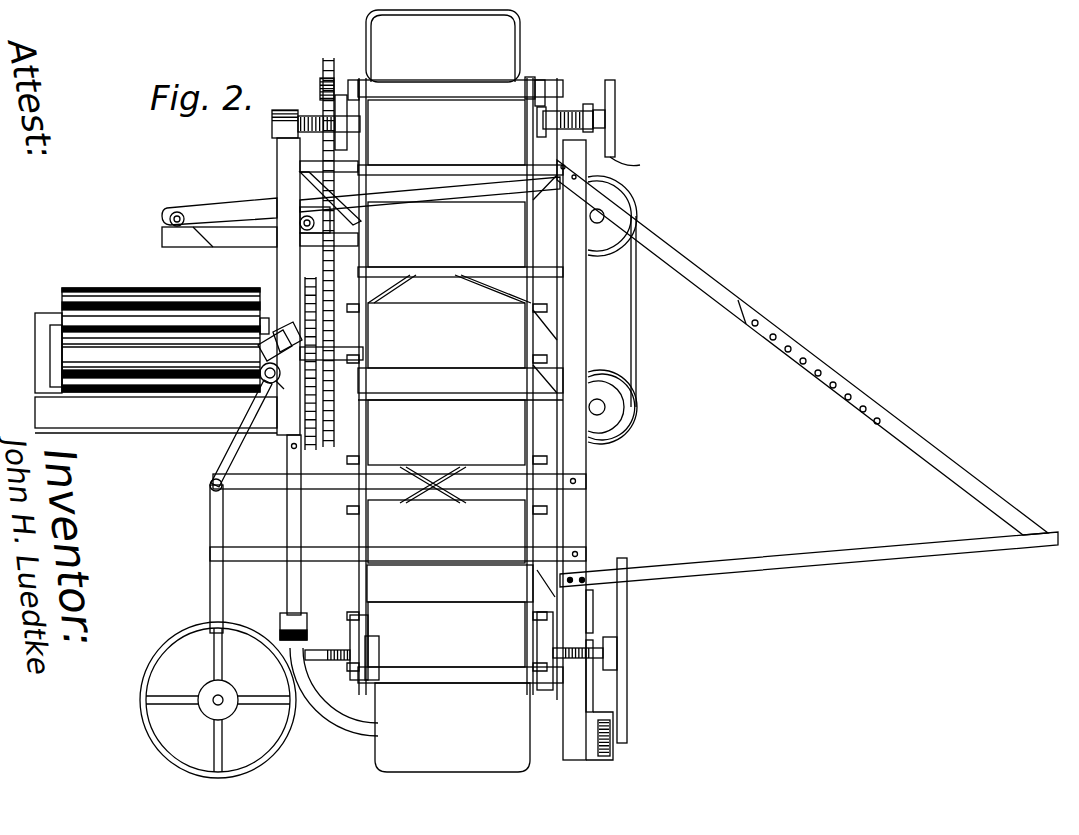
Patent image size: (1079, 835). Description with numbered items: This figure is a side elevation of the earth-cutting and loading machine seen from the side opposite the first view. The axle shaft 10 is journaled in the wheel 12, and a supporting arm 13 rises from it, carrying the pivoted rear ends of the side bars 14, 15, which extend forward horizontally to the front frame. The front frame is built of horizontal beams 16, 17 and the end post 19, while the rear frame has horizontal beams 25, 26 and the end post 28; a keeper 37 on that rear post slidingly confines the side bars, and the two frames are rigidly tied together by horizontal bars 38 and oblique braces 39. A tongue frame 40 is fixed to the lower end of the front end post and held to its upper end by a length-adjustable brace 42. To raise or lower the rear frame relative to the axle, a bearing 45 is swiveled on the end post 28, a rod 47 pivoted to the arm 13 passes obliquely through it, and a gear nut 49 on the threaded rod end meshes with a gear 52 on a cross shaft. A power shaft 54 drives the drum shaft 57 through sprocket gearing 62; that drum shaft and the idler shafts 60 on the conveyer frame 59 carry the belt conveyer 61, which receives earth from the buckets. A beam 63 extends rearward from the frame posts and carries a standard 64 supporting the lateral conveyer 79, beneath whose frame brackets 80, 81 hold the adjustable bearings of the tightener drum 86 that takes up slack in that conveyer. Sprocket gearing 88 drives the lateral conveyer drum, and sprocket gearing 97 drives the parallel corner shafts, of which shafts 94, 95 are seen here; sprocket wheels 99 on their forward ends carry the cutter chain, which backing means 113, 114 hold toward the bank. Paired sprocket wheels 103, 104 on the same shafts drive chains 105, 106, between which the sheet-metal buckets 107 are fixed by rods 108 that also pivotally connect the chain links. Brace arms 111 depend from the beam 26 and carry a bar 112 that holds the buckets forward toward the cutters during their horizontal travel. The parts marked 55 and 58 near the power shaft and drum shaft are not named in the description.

The axle shaft 10 is at (216, 698).
The wheel 12 is at (160, 660).
The supporting arm 13 is at (210, 587).
The side bar 14 is at (248, 481).
The side bar 15 is at (255, 561).
The horizontal beam 16 is at (639, 155).
The horizontal beam 17 is at (590, 620).
The end post 19 is at (586, 337).
The horizontal beam 25 is at (272, 148).
The horizontal beam 26 is at (280, 625).
The end post 28 is at (288, 178).
The keeper 37 is at (292, 527).
The horizontal bar 38 is at (331, 350).
The oblique brace 39 is at (404, 285).
The tongue frame 40 is at (829, 560).
The brace 42 is at (918, 448).
The bearing 45 is at (280, 339).
The rod 47 is at (225, 462).
The gear nut 49 is at (260, 362).
The gear 52 is at (288, 392).
The power shaft 54 is at (606, 406).
The shaft 55 is at (606, 414).
The drum shaft 57 is at (604, 212).
The shaft 58 is at (605, 226).
The conveyer frame 59 is at (245, 247).
The idler shaft 60 is at (188, 220).
The belt conveyer 61 is at (430, 190).
The sprocket gearing 62 is at (636, 285).
The beam 63 is at (156, 415).
The standard 64 is at (43, 366).
The conveyer 79 is at (146, 296).
The bracket 80 is at (56, 349).
The bracket 81 is at (161, 357).
The tightener drum 86 is at (161, 357).
The sprocket gearing 88 is at (305, 282).
The shaft 94 is at (316, 120).
The shaft 95 is at (330, 650).
The sprocket gearing 97 is at (320, 80).
The sprocket wheel 99 is at (615, 82).
The sprocket wheel 103 is at (540, 86).
The sprocket wheel 104 is at (372, 86).
The chain 105 is at (520, 80).
The chain 106 is at (355, 78).
The bucket 107 is at (448, 391).
The rod 108 is at (345, 95).
The brace arm 111 is at (330, 712).
The bar 112 is at (340, 702).
The backing means 113 is at (582, 708).
The backing means 114 is at (611, 760).